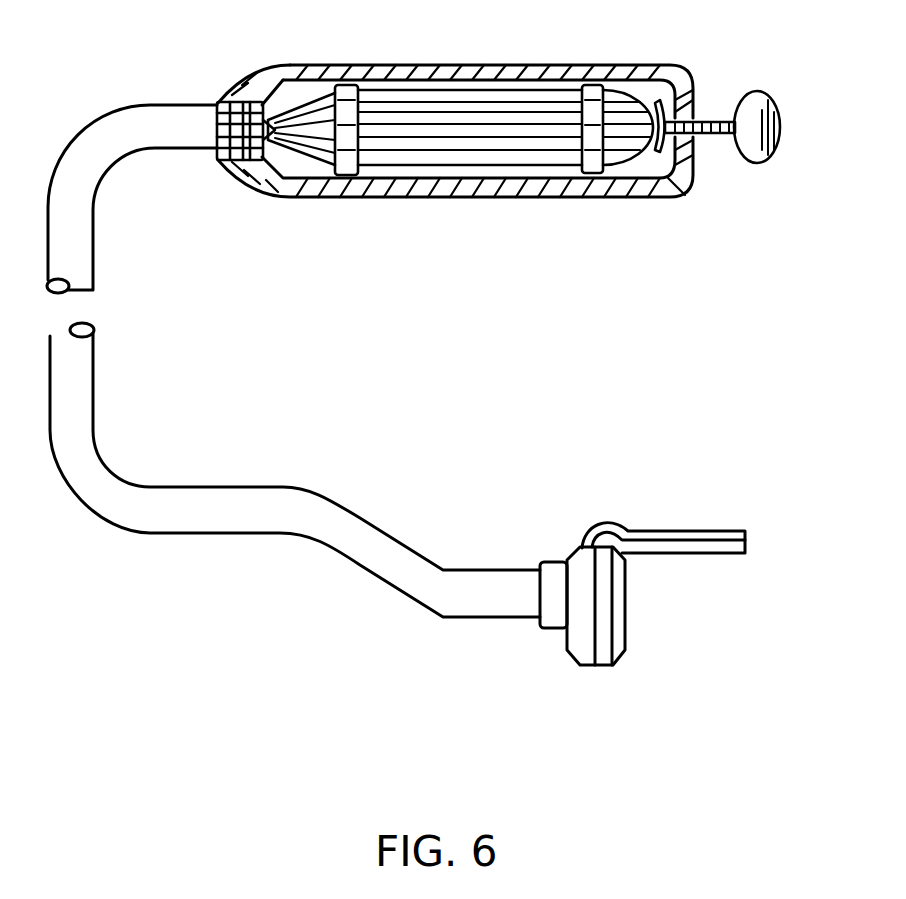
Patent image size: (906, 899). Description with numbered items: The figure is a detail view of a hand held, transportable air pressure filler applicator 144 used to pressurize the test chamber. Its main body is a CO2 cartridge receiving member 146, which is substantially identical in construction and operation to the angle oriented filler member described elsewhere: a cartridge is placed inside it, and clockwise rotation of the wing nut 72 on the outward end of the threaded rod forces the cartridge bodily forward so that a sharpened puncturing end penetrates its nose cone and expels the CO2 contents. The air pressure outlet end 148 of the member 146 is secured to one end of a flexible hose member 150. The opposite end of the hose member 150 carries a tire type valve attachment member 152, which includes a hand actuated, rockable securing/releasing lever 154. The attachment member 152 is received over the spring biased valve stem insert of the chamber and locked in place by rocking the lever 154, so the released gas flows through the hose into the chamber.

The wing nut 72 is at (742, 158).
The air pressure filler applicator 144 is at (352, 216).
The CO2 cartridge receiving member 146 is at (567, 198).
The air pressure outlet end 148 is at (293, 110).
The flexible hose member 150 is at (75, 205).
The tire type valve attachment member 152 is at (625, 615).
The securing/releasing lever 154 is at (668, 548).